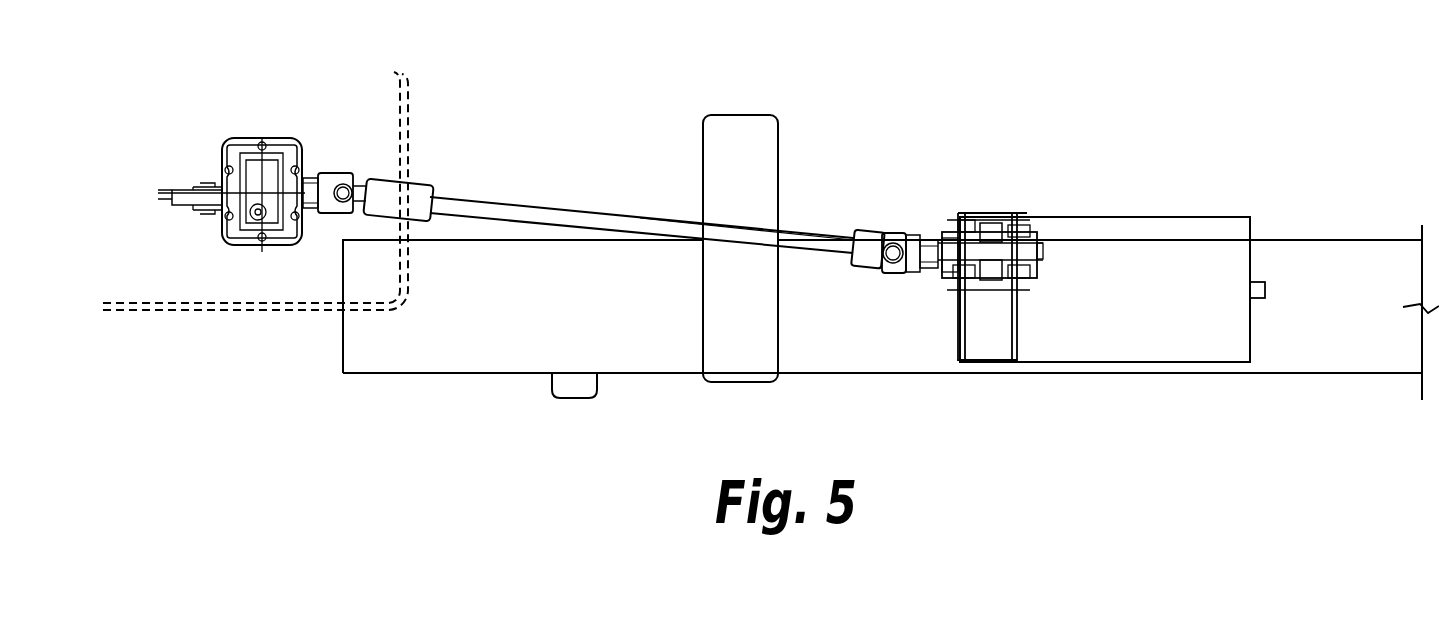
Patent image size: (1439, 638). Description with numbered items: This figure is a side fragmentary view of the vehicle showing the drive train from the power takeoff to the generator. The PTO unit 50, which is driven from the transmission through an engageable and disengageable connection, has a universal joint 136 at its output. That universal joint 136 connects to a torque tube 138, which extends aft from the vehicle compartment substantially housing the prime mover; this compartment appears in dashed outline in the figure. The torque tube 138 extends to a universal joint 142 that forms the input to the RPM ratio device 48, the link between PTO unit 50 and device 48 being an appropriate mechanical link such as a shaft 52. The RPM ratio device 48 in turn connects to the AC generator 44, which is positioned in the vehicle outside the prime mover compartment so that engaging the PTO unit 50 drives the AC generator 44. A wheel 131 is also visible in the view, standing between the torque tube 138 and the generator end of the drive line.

The AC generator 44 is at (1170, 213).
The RPM ratio device 48 is at (992, 210).
The PTO unit 50 is at (222, 151).
The shaft 52 is at (515, 205).
The wheel 131 is at (778, 162).
The universal joint 136 is at (347, 172).
The torque tube 138 is at (628, 215).
The universal joint 142 is at (408, 109).